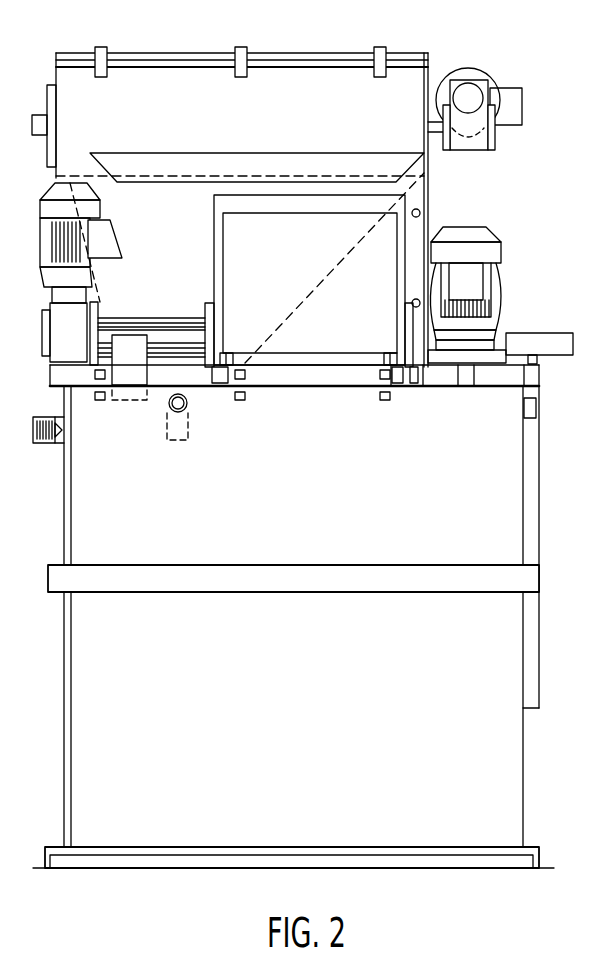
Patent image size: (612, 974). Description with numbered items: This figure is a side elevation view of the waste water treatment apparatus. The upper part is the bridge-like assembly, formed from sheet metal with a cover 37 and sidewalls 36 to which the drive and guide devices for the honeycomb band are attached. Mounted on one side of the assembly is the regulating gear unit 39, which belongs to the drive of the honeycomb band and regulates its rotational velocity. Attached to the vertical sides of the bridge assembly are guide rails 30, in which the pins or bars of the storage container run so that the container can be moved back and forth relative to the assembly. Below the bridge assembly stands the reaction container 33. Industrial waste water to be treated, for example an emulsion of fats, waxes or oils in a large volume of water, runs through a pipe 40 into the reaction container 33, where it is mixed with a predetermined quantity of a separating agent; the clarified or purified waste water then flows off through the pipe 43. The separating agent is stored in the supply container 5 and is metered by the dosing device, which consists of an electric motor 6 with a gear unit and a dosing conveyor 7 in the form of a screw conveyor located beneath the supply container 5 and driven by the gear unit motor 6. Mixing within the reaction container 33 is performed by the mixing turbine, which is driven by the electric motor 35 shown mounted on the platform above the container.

The cover 37 is at (192, 60).
The sidewalls 36 is at (266, 122).
The regulating gear unit 39 is at (492, 140).
The electric motor 6 is at (110, 243).
The dosing conveyor 7 is at (100, 327).
The supply container 5 is at (304, 269).
The electric motor 35 is at (496, 302).
The guide rails 30 is at (559, 350).
The reaction container 33 is at (406, 501).
The pipe 40 is at (187, 405).
The pipe 43 is at (42, 445).